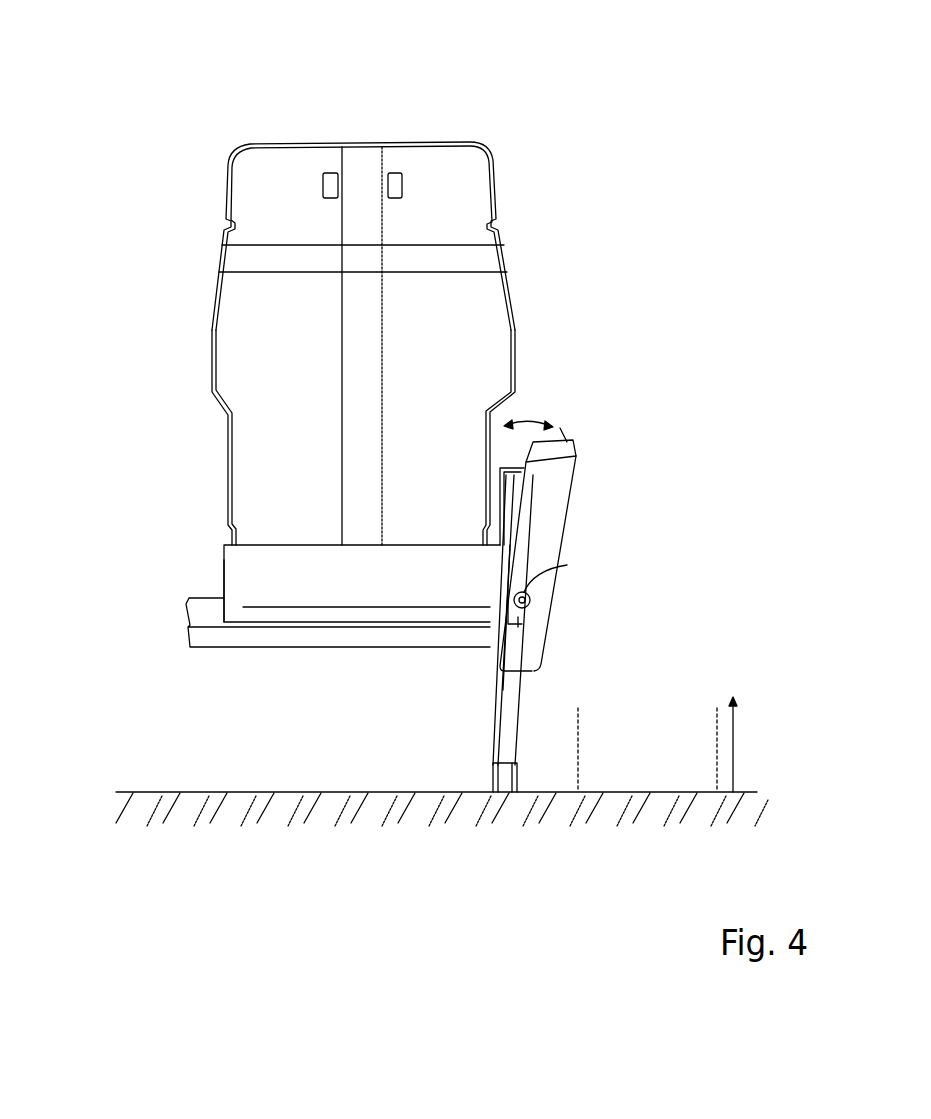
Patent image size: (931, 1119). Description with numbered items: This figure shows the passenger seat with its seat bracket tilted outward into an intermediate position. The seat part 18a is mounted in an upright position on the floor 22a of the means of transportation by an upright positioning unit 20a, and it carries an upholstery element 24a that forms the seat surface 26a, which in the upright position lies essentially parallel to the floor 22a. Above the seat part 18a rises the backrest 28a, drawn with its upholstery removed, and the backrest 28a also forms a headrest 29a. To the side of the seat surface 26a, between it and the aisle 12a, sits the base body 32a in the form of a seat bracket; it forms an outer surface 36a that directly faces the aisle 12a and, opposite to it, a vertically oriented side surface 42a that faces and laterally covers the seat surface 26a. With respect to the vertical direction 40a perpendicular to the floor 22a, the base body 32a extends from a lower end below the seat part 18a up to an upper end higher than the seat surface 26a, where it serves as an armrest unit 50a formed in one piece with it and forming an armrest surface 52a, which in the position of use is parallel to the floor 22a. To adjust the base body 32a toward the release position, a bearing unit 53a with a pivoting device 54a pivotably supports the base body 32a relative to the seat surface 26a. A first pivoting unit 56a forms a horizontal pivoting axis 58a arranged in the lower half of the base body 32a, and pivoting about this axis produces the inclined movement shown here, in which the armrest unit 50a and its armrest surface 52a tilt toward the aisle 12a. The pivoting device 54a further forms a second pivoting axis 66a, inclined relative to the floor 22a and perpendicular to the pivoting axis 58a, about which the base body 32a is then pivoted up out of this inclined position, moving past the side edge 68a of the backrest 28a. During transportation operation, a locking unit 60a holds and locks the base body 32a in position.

The aisle 12a is at (645, 752).
The seat part 18a is at (224, 562).
The upright positioning unit 20a is at (510, 652).
The floor 22a is at (148, 790).
The upholstery element 24a is at (331, 587).
The seat surface 26a is at (273, 538).
The backrest 28a is at (440, 178).
The headrest 29a is at (285, 172).
The base body 32a is at (574, 470).
The outer surface 36a is at (546, 602).
The vertical direction 40a is at (734, 745).
The side surface 42a is at (522, 522).
The armrest unit 50a is at (580, 454).
The armrest surface 52a is at (571, 441).
The bearing unit 53a is at (500, 765).
The pivoting device 54a is at (517, 622).
The first pivoting unit 56a is at (567, 565).
The pivoting axis 58a is at (535, 611).
The locking unit 60a is at (520, 486).
The pivoting axis 66a is at (495, 652).
The side edge 68a is at (513, 392).